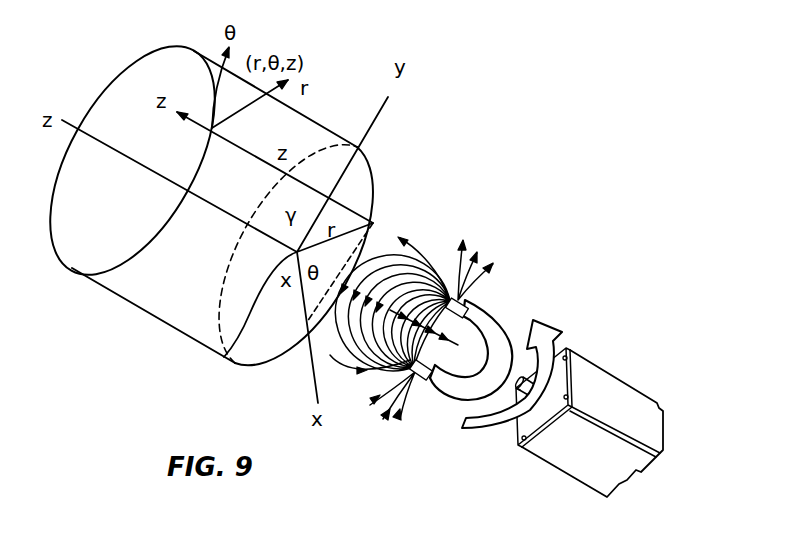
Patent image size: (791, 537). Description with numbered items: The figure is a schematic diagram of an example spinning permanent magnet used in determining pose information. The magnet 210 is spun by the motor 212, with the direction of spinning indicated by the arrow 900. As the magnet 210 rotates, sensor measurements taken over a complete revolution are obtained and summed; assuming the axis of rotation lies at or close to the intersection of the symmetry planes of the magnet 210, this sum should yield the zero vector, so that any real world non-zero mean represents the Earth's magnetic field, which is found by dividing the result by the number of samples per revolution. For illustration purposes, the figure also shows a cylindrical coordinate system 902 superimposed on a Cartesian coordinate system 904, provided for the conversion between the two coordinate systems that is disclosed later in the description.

The cylindrical coordinate system 902 is at (127, 70).
The Cartesian coordinate system 904 is at (222, 356).
The magnet 210 is at (488, 312).
The arrow 900 is at (547, 323).
The motor 212 is at (617, 374).